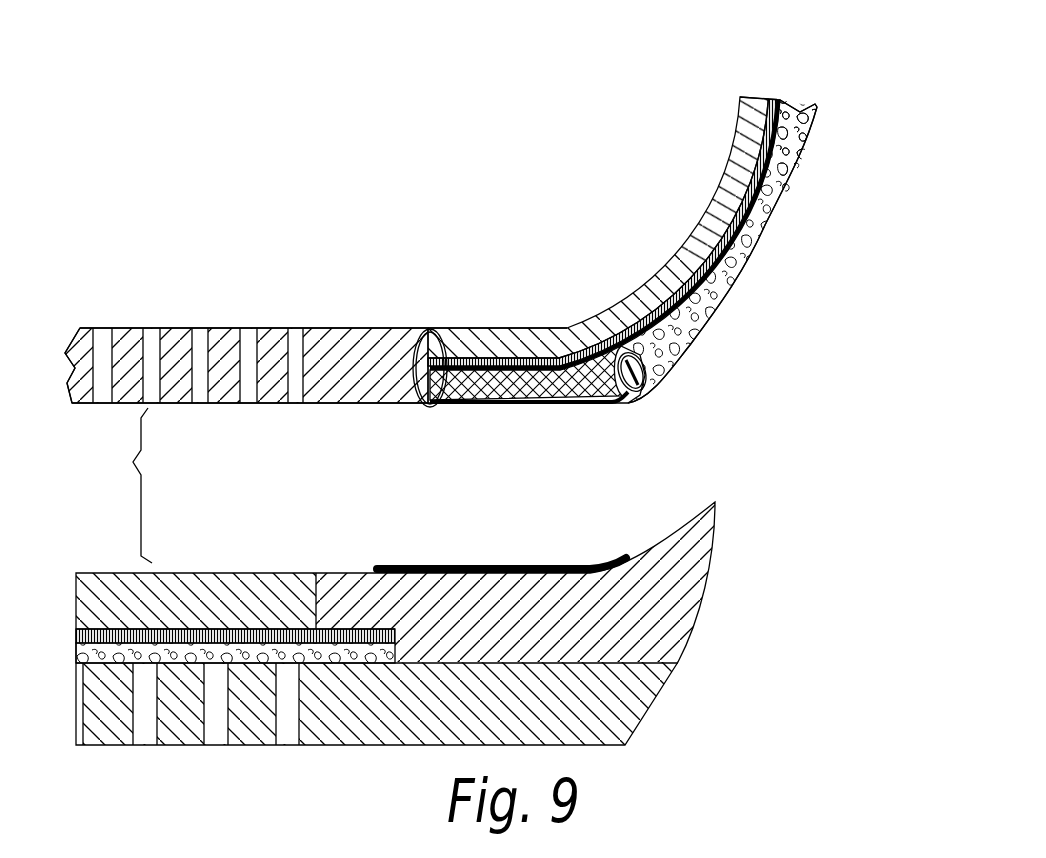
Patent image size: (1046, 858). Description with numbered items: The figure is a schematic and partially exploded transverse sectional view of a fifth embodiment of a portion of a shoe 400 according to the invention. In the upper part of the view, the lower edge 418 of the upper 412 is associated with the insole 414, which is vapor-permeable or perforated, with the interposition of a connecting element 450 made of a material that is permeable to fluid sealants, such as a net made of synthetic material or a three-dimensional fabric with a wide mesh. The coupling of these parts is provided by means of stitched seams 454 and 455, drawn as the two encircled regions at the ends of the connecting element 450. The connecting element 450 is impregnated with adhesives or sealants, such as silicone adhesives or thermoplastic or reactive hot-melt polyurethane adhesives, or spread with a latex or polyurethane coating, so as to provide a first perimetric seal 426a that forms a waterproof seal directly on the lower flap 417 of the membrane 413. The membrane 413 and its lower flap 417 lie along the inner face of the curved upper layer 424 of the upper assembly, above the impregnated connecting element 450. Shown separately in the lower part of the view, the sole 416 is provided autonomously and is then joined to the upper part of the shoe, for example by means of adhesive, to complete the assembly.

The end effector assembly 400 is at (445, 213).
The upper 412 is at (797, 143).
The membrane 413 is at (777, 100).
The insole 414 is at (320, 335).
The sole 416 is at (664, 719).
The lower flap 417 is at (495, 335).
The lower edge 418 is at (698, 323).
The support layer 424 is at (737, 150).
The first perimetric seal 426a is at (597, 358).
The connecting element 450 is at (560, 366).
The stitched seam 454 is at (648, 366).
The stitched seam 455 is at (417, 385).